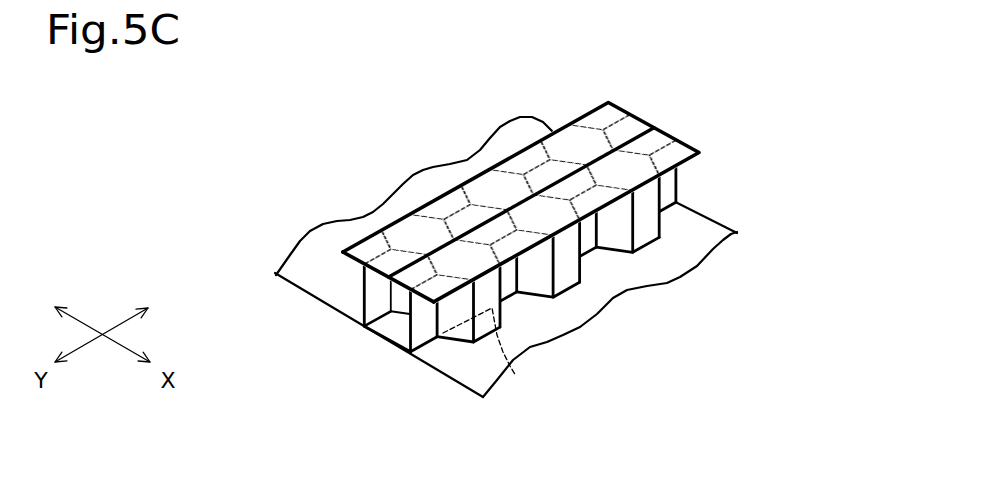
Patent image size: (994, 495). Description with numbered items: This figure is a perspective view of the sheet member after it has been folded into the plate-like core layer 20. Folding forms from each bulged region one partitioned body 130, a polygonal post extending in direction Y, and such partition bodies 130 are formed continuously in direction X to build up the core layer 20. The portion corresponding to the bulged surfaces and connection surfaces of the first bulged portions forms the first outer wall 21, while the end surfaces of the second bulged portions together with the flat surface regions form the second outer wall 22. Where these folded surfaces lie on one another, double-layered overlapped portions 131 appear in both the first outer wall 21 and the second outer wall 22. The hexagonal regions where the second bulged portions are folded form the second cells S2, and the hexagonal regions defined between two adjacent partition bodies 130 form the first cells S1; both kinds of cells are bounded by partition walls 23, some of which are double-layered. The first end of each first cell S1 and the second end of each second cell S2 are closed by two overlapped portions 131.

The core layer 20 is at (724, 184).
The first outer wall 21 is at (359, 264).
The second outer wall 22 is at (392, 330).
The partition walls 23 is at (366, 299).
The partitioned body 130 is at (615, 110).
The overlapped portions 131 is at (512, 265).
The first cells S1 is at (561, 165).
The second cells S2 is at (490, 194).